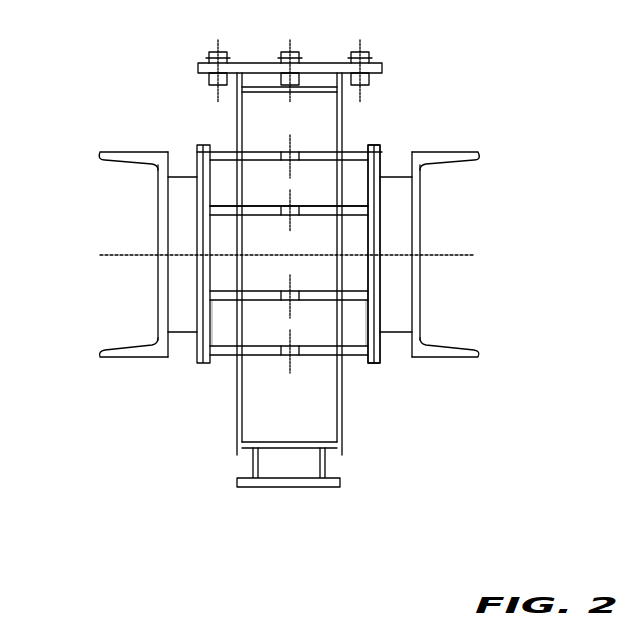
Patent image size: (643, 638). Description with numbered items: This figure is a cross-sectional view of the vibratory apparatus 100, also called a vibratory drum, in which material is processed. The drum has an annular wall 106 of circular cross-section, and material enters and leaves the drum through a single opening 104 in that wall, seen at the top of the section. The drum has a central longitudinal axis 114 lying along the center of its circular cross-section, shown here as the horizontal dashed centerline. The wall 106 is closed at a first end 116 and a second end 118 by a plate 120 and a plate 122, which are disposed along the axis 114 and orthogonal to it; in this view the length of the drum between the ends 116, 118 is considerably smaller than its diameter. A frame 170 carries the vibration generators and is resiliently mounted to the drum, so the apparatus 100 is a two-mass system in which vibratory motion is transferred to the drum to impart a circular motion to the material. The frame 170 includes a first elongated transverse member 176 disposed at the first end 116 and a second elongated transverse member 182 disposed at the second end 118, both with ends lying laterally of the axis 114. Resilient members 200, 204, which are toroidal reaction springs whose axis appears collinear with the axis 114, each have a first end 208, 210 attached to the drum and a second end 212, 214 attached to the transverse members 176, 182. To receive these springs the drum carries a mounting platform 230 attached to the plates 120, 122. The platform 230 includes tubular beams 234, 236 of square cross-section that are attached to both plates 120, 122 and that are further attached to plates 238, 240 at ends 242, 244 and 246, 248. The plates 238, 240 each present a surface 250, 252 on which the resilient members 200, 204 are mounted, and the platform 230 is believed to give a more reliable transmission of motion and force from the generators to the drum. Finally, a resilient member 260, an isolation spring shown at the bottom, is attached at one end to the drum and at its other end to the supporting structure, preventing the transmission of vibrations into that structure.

The vibratory apparatus 100 is at (468, 50).
The opening 104 is at (285, 250).
The annular wall 106 is at (367, 53).
The central longitudinal axis 114 is at (473, 255).
The first end 116 is at (350, 462).
The second end 118 is at (223, 468).
The plate 120 is at (343, 408).
The plate 122 is at (235, 408).
The frame 170 is at (110, 246).
The first elongated transverse member 176 is at (418, 218).
The second elongated transverse member 182 is at (153, 215).
The first resilient member 200 is at (410, 320).
The resilient member 204 is at (165, 300).
The first end 208 is at (380, 348).
The first end 210 is at (198, 328).
The second end 212 is at (427, 343).
The second end 214 is at (153, 327).
The mounting platform 230 is at (379, 148).
The tubular beam 234 is at (256, 149).
The tubular beam 236 is at (275, 366).
The plate 238 is at (200, 270).
The plate 240 is at (382, 292).
The end 242 is at (197, 146).
The end 244 is at (349, 151).
The end 246 is at (217, 320).
The end 248 is at (353, 322).
The surface 250 is at (200, 237).
The surface 252 is at (380, 235).
The resilient member 260 is at (292, 460).